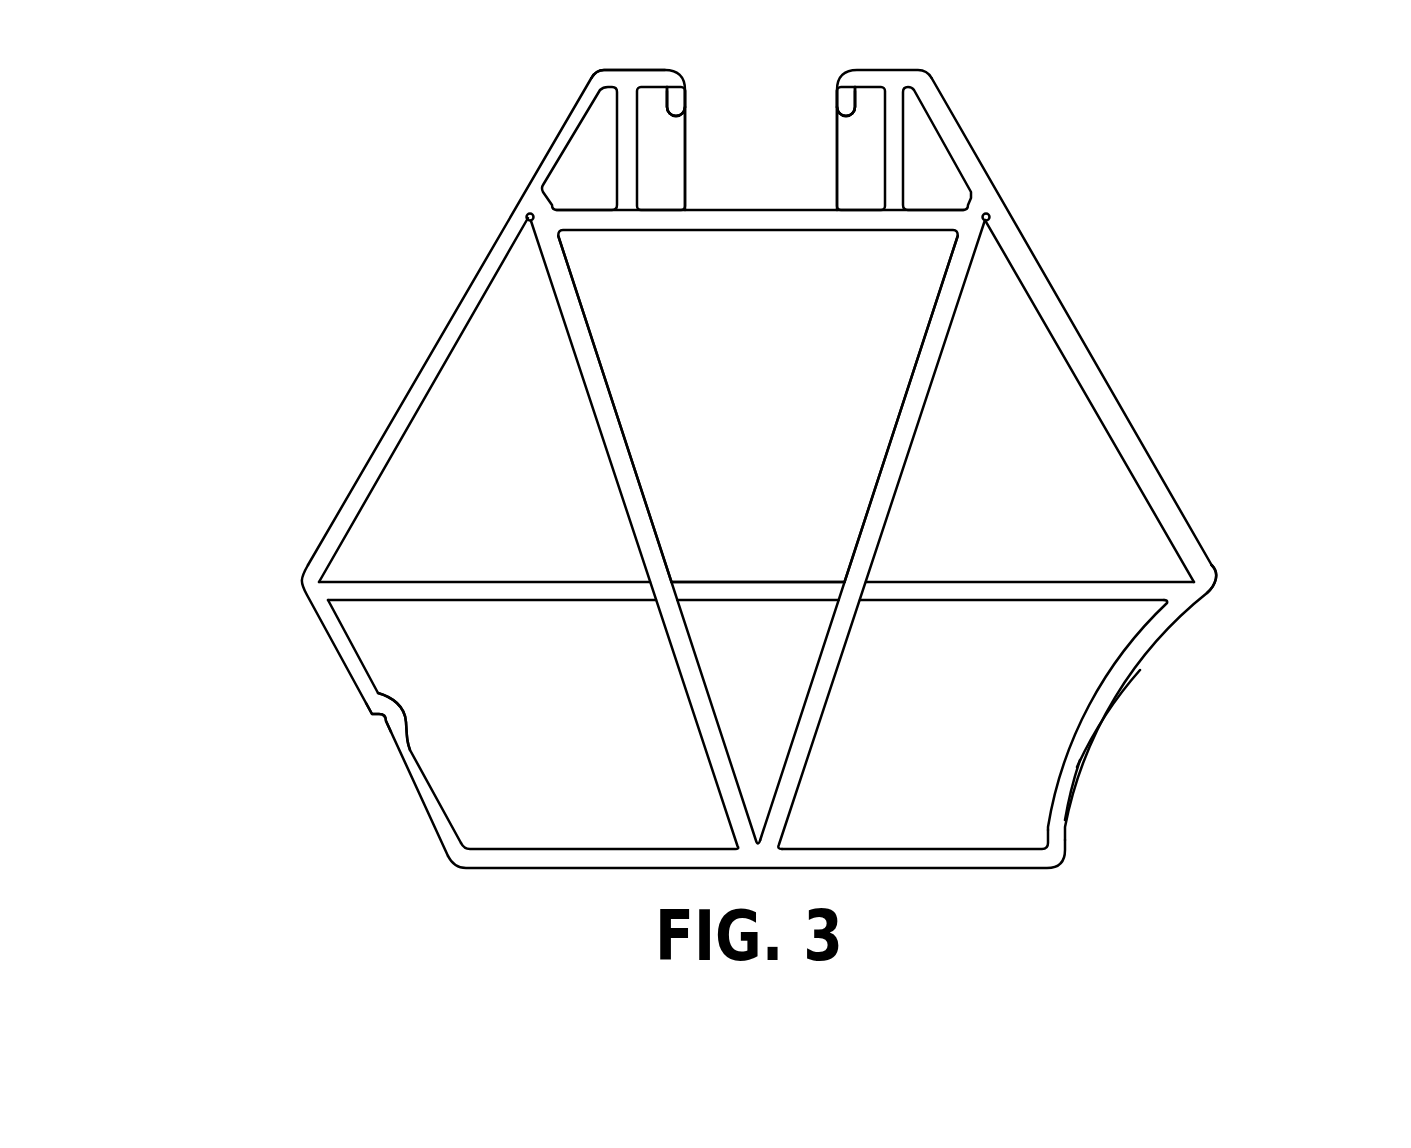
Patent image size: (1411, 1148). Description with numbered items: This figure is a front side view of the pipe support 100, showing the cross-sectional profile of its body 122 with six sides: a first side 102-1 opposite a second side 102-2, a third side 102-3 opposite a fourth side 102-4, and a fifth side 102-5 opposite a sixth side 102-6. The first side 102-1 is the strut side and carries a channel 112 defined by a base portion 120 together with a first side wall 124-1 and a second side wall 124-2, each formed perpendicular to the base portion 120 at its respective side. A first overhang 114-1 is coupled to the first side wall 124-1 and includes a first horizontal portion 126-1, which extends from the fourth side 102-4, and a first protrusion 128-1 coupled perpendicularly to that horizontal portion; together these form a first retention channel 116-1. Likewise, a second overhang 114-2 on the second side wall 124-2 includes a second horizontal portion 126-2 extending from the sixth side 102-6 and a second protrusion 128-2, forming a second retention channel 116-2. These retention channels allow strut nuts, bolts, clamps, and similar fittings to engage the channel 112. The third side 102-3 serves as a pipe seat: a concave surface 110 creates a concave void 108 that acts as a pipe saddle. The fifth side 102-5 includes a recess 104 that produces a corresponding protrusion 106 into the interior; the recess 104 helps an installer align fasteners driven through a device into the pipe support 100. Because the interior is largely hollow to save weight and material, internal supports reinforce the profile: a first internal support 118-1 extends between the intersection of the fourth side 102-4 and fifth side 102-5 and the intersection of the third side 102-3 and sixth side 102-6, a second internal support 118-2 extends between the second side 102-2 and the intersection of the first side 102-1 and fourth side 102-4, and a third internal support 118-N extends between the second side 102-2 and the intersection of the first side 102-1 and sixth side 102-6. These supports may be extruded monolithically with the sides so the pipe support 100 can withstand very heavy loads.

The pipe support 100 is at (114, 72).
The first side 102-1 is at (600, 65).
The second side 102-2 is at (530, 862).
The third side 102-3 is at (1117, 663).
The fourth side 102-4 is at (453, 323).
The fifth side 102-5 is at (335, 648).
The sixth side 102-6 is at (1090, 372).
The recess 104 is at (352, 720).
The protrusion 106 is at (398, 720).
The concave void 108 is at (1112, 733).
The concave surface 110 is at (1073, 770).
The channel 112 is at (755, 172).
The first overhang 114-1 is at (678, 73).
The second overhang 114-2 is at (844, 73).
The first retention channel 116-1 is at (648, 106).
The second retention channel 116-2 is at (874, 106).
The first internal support 118-1 is at (397, 590).
The second internal support 118-2 is at (717, 743).
The third internal support 118-N is at (800, 743).
The base portion 120 is at (760, 220).
The body 122 is at (1262, 570).
The first side wall 124-1 is at (623, 170).
The second side wall 124-2 is at (890, 170).
The first horizontal portion 126-1 is at (657, 75).
The second horizontal portion 126-2 is at (867, 74).
The first protrusion 128-1 is at (675, 107).
The second protrusion 128-2 is at (847, 107).